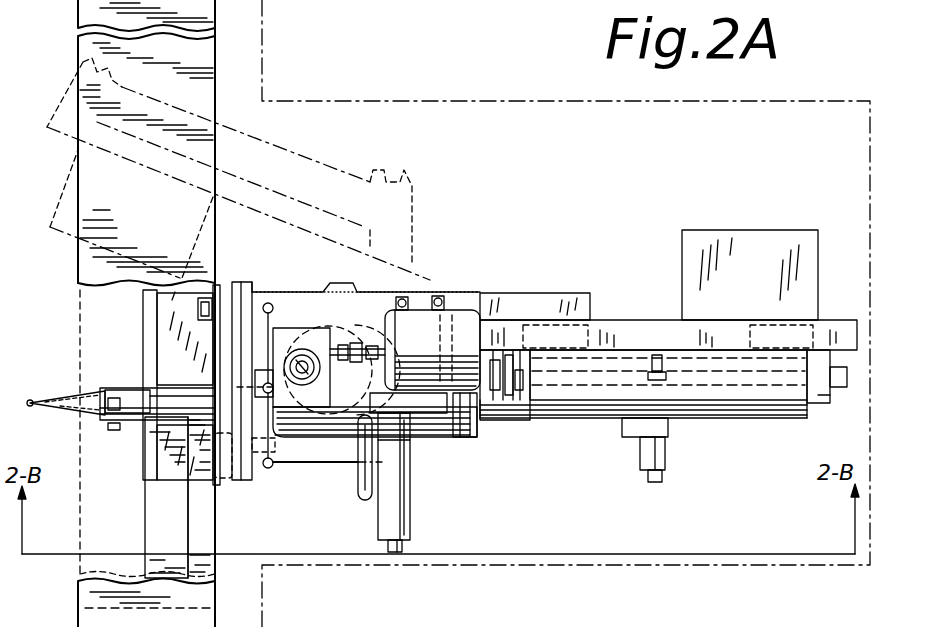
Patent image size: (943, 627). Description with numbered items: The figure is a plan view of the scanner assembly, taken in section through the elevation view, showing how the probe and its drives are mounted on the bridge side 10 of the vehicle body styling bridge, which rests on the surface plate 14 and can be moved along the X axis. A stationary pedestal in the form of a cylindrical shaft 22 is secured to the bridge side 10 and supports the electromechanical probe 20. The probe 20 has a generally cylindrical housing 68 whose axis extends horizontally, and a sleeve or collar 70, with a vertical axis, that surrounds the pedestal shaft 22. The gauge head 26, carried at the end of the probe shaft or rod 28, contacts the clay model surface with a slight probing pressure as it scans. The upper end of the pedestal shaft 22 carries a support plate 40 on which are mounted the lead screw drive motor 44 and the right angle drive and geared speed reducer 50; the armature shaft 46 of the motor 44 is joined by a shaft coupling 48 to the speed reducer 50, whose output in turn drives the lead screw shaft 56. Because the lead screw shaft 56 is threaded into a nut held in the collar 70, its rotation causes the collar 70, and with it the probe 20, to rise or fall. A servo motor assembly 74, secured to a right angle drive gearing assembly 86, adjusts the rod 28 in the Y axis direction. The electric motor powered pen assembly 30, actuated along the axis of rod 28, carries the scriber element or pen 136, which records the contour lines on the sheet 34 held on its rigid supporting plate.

The vehicle body styling bridge side 10 is at (426, 285).
The surface plate 14 is at (155, 518).
The electromechanical probe 20 is at (438, 446).
The cylindrical shaft pedestal 22 is at (343, 415).
The gauge head 26 is at (52, 396).
The probe shaft or rod 28 is at (136, 390).
The electric motor powered pen assembly 30 is at (675, 429).
The sheet 34 is at (780, 368).
The support plate 40 is at (459, 404).
The lead screw drive motor 44 is at (478, 315).
The armature shaft 46 is at (378, 342).
The shaft coupling 48 is at (402, 290).
The right angle drive and geared speed reducer 50 is at (297, 395).
The lead screw shaft 56 is at (280, 262).
The cylindrical housing 68 is at (303, 432).
The sleeve or collar 70 is at (368, 283).
The servo motor assembly 74 is at (387, 523).
The right angle drive gearing assembly 86 is at (430, 417).
The scriber element or pen 136 is at (650, 320).